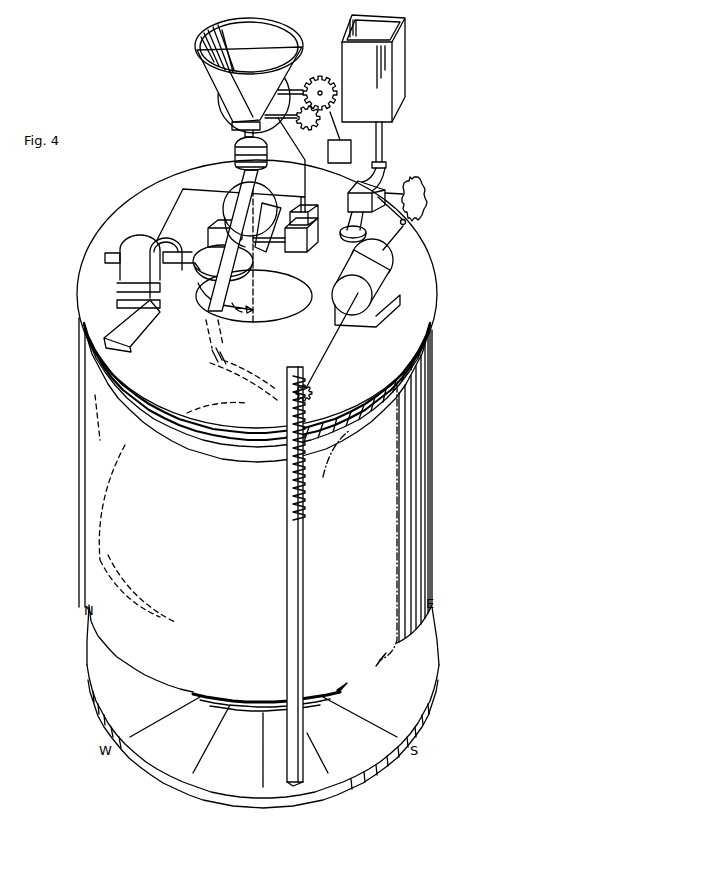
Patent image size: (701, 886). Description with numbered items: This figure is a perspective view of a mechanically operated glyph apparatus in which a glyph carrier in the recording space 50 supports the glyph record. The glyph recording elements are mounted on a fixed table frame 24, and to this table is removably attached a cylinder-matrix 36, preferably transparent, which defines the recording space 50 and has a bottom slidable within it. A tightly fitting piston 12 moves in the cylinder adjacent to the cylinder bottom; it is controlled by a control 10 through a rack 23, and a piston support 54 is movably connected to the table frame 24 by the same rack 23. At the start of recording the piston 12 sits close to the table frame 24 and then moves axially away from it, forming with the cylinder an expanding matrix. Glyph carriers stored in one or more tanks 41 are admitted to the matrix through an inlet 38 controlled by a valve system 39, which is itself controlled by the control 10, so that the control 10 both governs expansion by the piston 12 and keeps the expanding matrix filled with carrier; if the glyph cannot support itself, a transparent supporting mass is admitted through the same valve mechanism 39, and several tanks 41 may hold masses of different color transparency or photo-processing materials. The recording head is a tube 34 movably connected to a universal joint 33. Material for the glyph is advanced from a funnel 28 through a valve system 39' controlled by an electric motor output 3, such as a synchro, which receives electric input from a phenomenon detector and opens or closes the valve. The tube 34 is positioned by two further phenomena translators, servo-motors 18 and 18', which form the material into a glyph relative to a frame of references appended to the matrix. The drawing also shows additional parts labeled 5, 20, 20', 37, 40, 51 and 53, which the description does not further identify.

The electric motor output 3 is at (339, 137).
The sweep path indicator 5 is at (360, 525).
The control 10 is at (392, 270).
The piston 12 is at (226, 471).
The servo-motor 18 is at (143, 261).
The servo-motor 18' is at (259, 206).
The support arm 20 is at (141, 326).
The second support block 20' is at (285, 235).
The rack 23 is at (305, 750).
The table frame 24 is at (423, 288).
The funnel 28 is at (197, 52).
The universal joint 33 is at (235, 143).
The tube 34 is at (233, 232).
The cylinder-matrix 36 is at (90, 553).
The rim line 37 is at (205, 452).
The inlet 38 is at (382, 146).
The valve system 39 is at (417, 211).
The valve system 39' is at (301, 89).
The brush 40 is at (427, 180).
The tank 41 is at (410, 66).
The recording space 50 is at (427, 453).
The ring band 51 is at (140, 397).
The base plate 53 is at (197, 773).
The piston support 54 is at (330, 695).